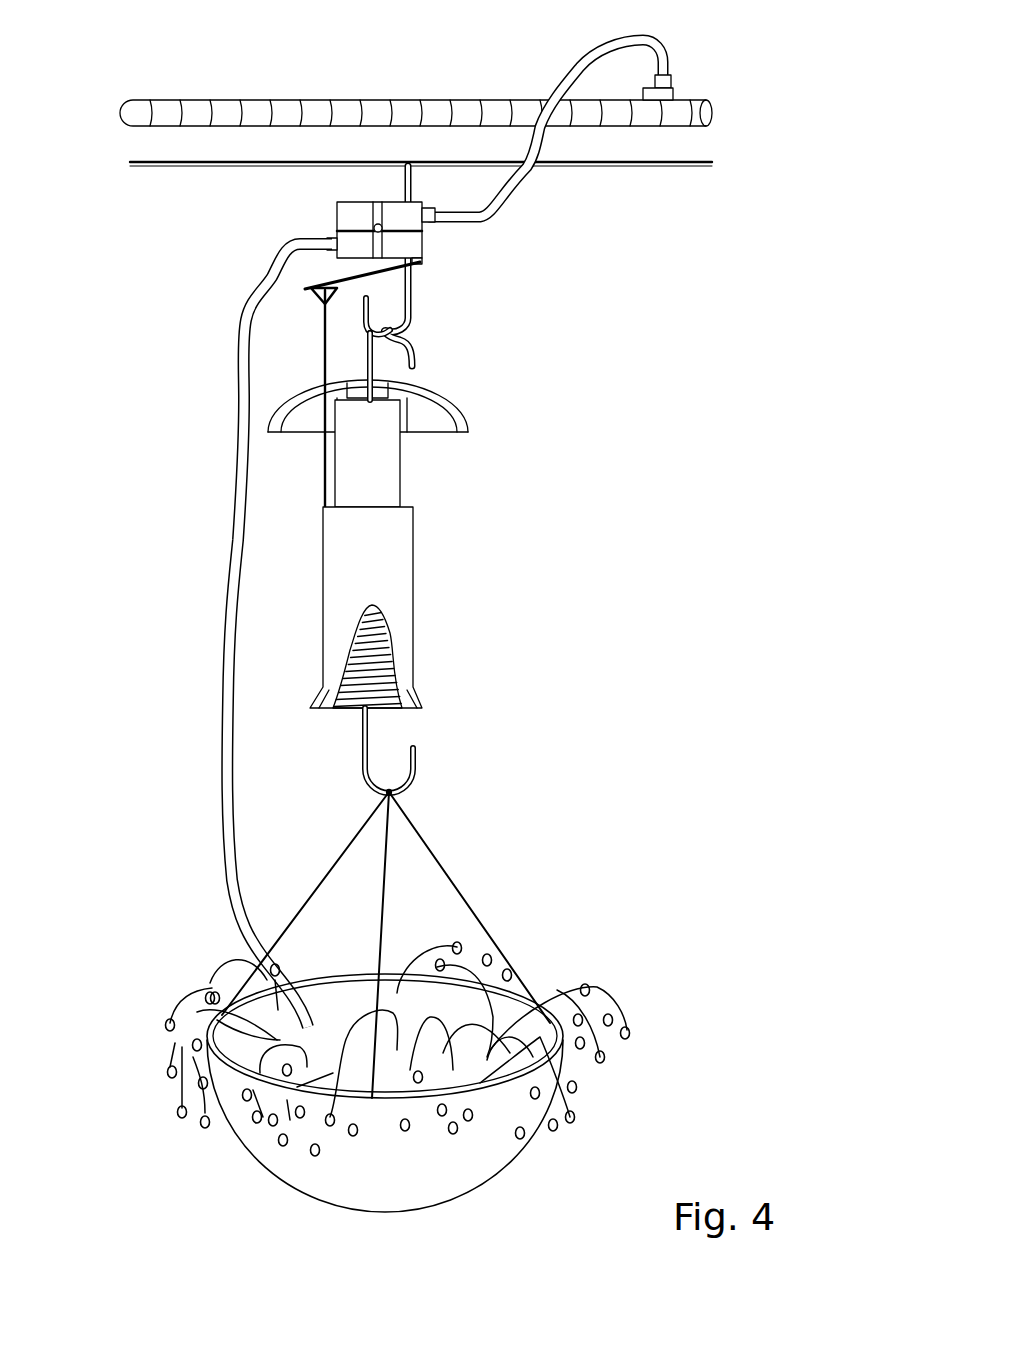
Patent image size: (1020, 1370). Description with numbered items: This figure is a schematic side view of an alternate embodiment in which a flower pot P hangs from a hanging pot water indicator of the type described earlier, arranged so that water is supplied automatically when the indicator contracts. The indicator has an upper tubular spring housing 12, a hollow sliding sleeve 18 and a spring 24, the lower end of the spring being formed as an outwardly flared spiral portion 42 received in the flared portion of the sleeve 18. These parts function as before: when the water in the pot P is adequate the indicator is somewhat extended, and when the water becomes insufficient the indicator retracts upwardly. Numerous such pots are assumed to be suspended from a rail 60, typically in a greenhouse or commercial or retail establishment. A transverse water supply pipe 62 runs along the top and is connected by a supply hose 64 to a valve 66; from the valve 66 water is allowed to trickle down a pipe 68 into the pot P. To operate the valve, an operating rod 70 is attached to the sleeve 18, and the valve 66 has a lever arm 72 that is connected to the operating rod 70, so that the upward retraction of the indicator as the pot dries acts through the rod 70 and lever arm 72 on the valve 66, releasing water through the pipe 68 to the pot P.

The water supply pipe 62 is at (288, 110).
The supply hose 64 is at (577, 80).
The rail 60 is at (215, 166).
The valve 66 is at (323, 225).
The lever arm 72 is at (342, 280).
The operating rod 70 is at (320, 365).
The pipe 68 is at (225, 548).
The tubular spring housing 12 is at (373, 462).
The sliding sleeve 18 is at (388, 565).
The spring 24 is at (390, 633).
The outwardly flared spiral portion 42 is at (387, 690).
The flower pot P is at (672, 945).